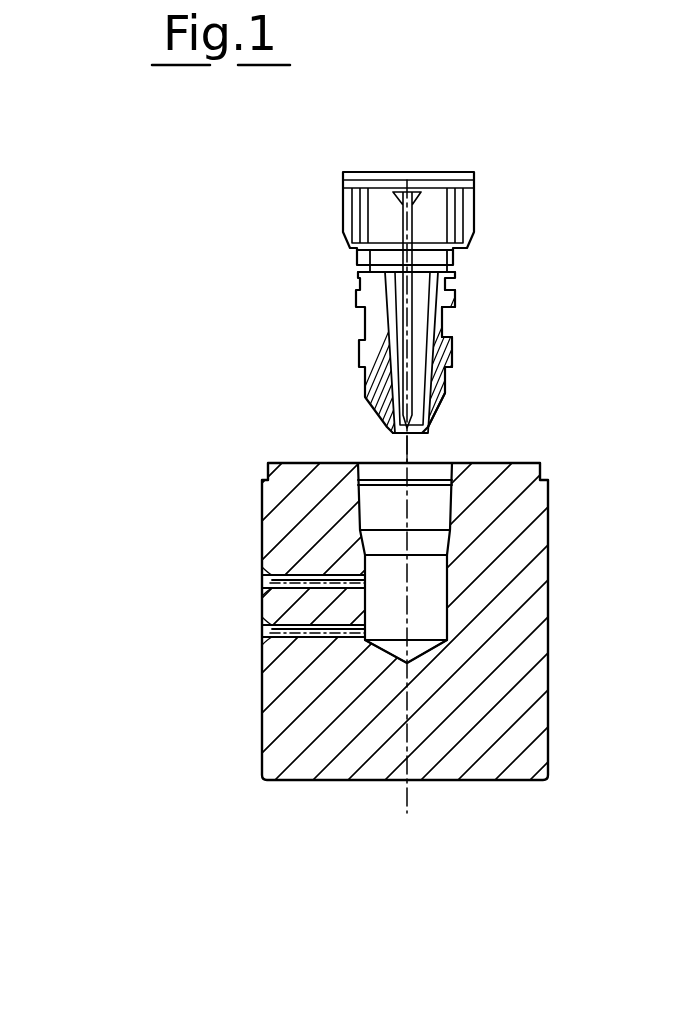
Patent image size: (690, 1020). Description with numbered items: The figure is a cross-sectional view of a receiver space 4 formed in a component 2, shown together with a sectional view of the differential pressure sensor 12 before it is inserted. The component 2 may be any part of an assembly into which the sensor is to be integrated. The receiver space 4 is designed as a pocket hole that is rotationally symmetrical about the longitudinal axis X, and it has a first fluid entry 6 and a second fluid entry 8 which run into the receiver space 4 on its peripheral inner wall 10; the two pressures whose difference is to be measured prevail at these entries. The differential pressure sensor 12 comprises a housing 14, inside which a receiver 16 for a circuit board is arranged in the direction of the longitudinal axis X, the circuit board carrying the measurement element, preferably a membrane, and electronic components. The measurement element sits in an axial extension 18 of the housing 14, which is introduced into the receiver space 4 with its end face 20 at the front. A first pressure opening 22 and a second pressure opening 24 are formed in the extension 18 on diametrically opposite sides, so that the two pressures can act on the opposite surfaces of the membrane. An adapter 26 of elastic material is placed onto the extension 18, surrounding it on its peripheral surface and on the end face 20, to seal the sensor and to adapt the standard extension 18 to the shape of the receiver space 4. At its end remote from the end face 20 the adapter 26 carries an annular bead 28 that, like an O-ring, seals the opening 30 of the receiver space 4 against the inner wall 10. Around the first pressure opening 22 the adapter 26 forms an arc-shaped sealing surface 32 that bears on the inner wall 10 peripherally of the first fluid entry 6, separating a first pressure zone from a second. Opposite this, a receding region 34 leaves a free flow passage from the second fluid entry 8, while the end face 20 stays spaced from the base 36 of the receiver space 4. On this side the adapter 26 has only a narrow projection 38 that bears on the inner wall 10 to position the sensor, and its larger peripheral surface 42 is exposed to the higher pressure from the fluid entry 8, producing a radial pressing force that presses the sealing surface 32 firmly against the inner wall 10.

The component 2 is at (523, 727).
The receiver space 4 is at (427, 593).
The first fluid entry 6 is at (265, 562).
The second fluid entry 8 is at (289, 638).
The peripheral inner wall 10 is at (293, 596).
The differential pressure sensor 12 is at (478, 212).
The housing 14 is at (475, 252).
The receiver for a circuit board 16 is at (362, 278).
The axial extension 18 is at (432, 412).
The end face 20 is at (385, 450).
The first pressure opening 22 is at (363, 377).
The second pressure opening 24 is at (432, 395).
The adapter 26 is at (433, 358).
The bead 28 is at (465, 305).
The opening 30 is at (440, 463).
The sealing surface 32 is at (362, 355).
The receding region 34 is at (372, 418).
The base 36 is at (403, 656).
The projection 38 is at (437, 424).
The peripheral surface 42 is at (432, 380).
The longitudinal axis X is at (407, 783).